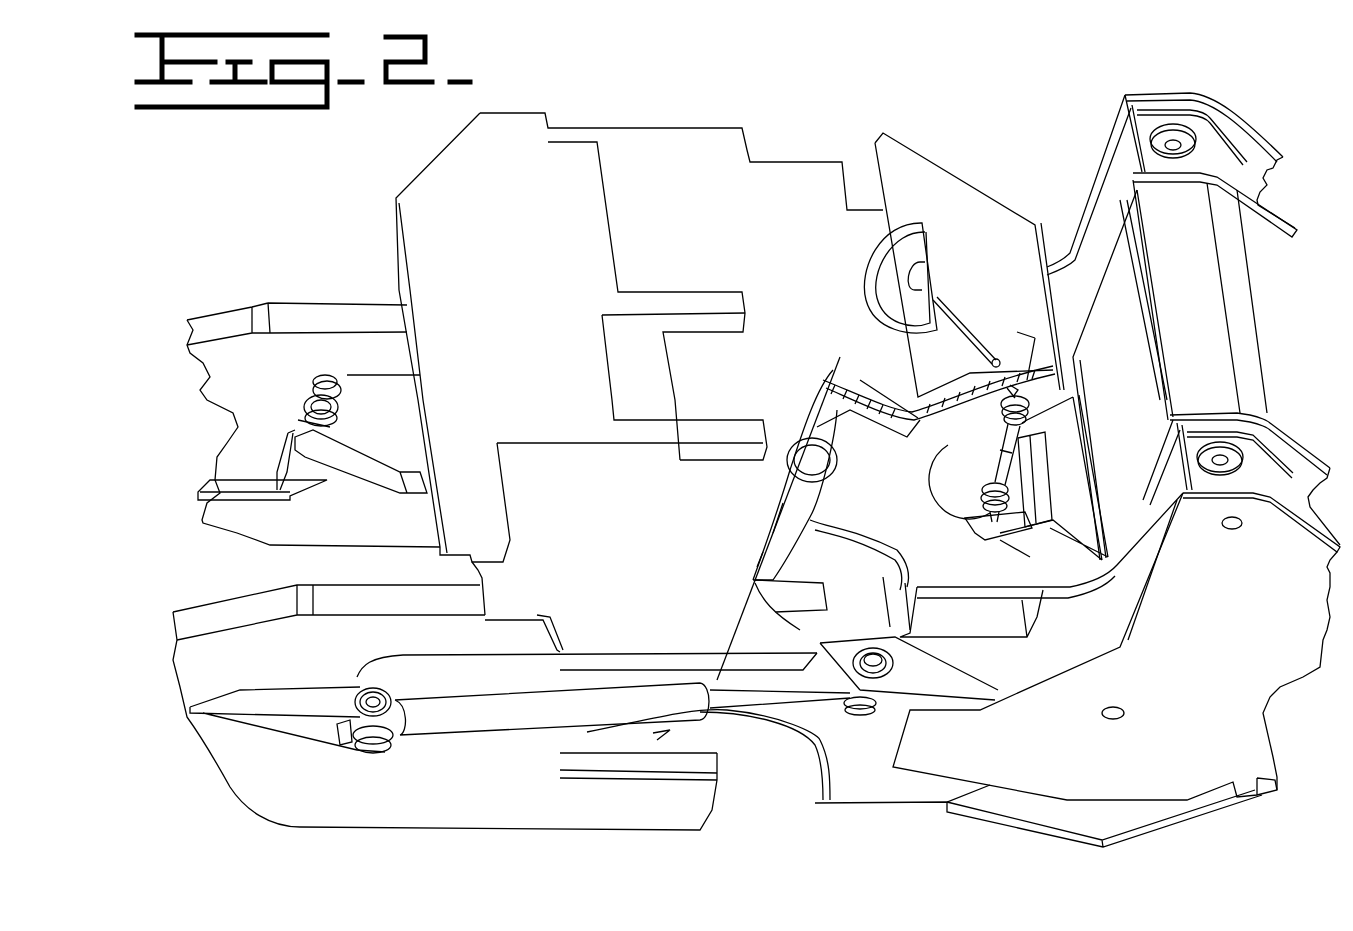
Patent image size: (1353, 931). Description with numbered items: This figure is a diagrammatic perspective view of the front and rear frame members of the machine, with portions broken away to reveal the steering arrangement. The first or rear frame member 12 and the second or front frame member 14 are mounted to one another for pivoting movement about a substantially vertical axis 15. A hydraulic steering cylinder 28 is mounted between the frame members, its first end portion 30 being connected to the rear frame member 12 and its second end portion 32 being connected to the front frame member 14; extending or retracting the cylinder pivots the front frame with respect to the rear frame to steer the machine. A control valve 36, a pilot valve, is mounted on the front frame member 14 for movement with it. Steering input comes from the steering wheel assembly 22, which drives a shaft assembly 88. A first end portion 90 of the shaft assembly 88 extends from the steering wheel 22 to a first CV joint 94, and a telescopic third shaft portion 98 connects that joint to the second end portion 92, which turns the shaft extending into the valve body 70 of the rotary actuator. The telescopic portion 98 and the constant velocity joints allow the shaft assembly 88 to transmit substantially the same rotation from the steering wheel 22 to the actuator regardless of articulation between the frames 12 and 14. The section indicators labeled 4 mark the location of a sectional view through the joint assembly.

The first frame member 12 is at (283, 815).
The second frame member 14 is at (1237, 610).
The substantially vertical axis 15 is at (765, 525).
The steering wheel assembly 22 is at (865, 285).
The hydraulic steering cylinder 28 is at (482, 705).
The first end portion 30 is at (425, 765).
The second end portion 32 is at (830, 673).
The control valve 36 is at (1037, 474).
The valve body 70 is at (1022, 516).
The shaft assembly 88 is at (993, 282).
The first end portion 90 is at (958, 328).
The second end portion 92 is at (988, 498).
The first CV joint 94 is at (1032, 409).
The third shaft portion 98 is at (990, 449).
The section line 4 is at (1000, 330).